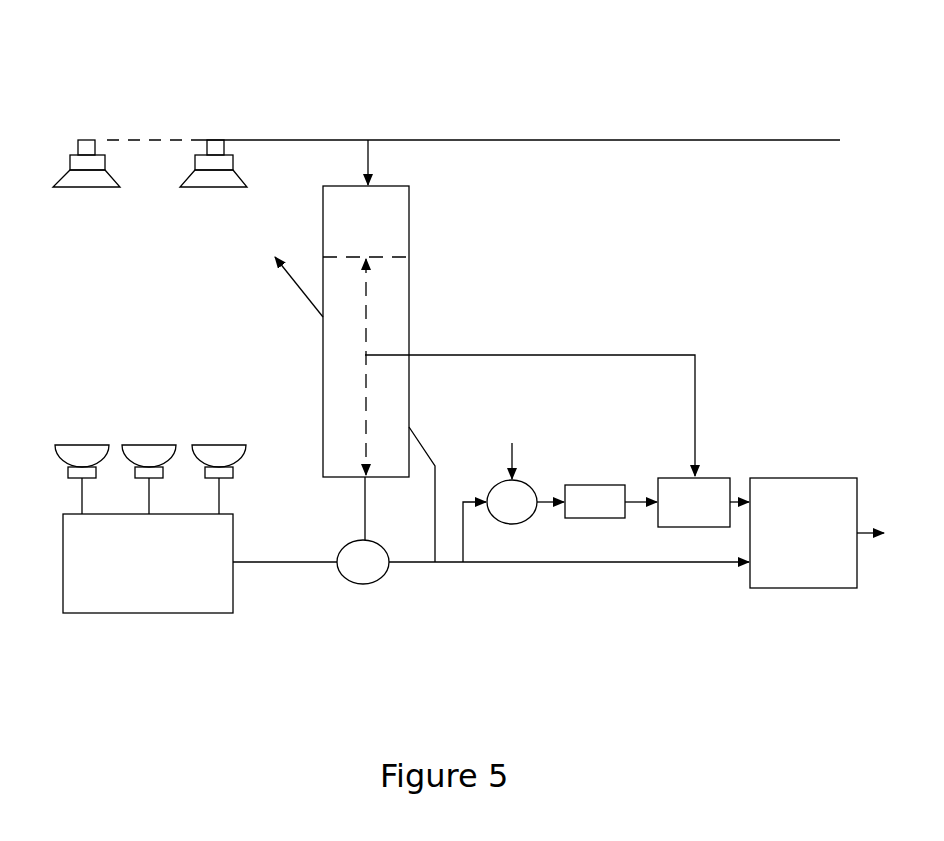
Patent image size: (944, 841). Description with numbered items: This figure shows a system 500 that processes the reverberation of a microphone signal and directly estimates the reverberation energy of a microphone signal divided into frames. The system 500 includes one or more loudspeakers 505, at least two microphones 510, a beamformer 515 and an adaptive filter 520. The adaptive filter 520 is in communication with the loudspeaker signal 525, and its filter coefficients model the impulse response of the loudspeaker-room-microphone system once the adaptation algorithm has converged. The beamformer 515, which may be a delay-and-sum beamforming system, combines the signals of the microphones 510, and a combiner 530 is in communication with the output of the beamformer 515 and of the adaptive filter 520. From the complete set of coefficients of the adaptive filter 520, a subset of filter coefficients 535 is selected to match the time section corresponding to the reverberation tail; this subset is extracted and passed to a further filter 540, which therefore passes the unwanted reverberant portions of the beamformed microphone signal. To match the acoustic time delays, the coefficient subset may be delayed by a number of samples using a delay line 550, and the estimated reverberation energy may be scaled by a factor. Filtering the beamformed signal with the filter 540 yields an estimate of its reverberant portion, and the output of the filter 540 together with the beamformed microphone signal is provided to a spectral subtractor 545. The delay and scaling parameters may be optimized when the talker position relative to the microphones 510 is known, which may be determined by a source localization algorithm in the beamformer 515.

The system 500 is at (340, 680).
The loudspeaker 505 is at (145, 122).
The microphones 510 is at (122, 408).
The beamformer 515 is at (148, 563).
The adaptive filter 520 is at (412, 227).
The loudspeaker signal 525 is at (523, 140).
The combiner 530 is at (381, 578).
The echo path transfer function h 535 is at (368, 318).
The filter 540 is at (718, 478).
The spectral subtractor 545 is at (803, 533).
The delay element 550 is at (588, 485).